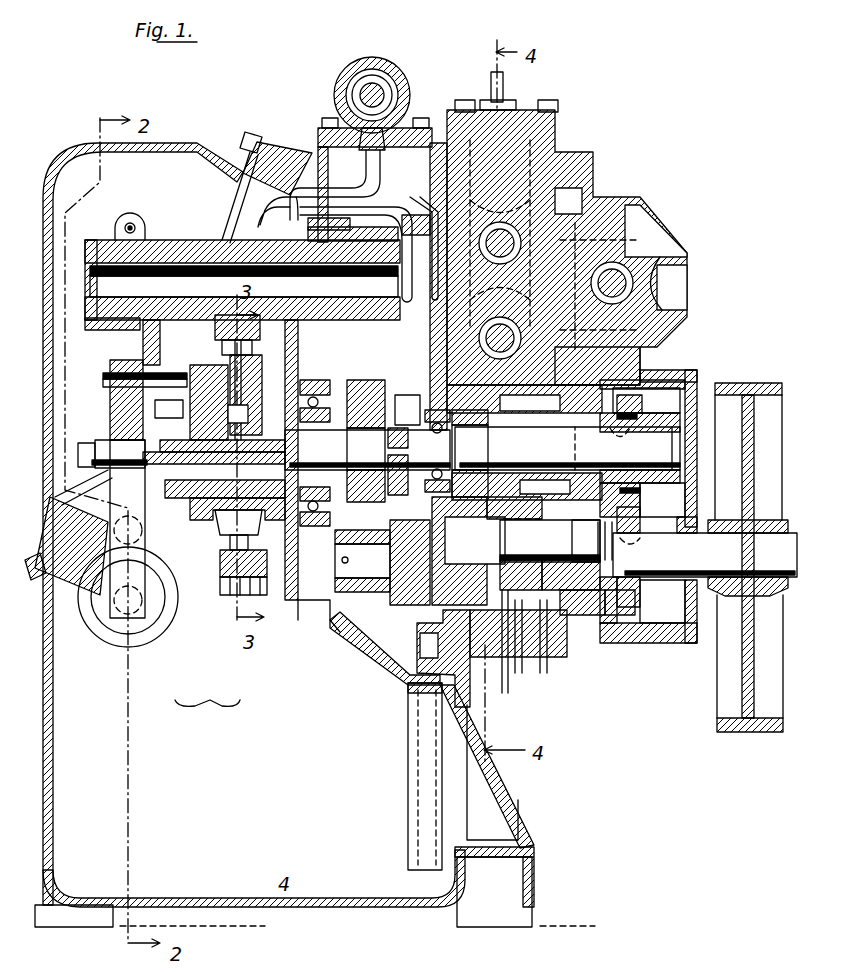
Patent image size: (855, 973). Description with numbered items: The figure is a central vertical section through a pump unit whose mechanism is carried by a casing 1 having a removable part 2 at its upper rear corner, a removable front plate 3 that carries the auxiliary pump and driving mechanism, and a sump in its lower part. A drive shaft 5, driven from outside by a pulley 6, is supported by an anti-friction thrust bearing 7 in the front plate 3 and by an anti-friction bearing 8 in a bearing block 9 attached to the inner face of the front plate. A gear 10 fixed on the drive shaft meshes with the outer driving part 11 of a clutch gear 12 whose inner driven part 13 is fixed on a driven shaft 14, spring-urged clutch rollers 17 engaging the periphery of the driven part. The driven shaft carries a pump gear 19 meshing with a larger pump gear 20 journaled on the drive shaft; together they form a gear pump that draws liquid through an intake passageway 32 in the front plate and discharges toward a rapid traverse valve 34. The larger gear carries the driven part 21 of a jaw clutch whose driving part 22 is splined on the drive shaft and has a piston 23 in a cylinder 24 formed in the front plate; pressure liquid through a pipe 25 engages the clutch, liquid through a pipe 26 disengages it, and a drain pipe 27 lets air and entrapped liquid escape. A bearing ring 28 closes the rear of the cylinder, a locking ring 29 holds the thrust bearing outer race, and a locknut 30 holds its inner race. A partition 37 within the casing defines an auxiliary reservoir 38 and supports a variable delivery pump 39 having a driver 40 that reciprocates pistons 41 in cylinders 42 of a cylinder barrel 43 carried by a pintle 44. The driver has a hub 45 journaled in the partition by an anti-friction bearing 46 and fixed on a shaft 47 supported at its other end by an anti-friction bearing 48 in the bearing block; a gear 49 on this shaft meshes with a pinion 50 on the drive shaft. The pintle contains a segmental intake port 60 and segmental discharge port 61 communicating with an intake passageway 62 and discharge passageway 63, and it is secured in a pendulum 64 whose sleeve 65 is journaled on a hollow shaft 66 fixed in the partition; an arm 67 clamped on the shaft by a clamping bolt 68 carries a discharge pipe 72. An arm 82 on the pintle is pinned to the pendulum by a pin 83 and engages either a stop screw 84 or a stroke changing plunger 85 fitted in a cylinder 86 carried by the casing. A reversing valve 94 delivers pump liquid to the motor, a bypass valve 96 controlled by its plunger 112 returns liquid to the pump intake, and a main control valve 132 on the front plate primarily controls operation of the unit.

The casing 1 is at (60, 675).
The removable part 2 is at (55, 167).
The front plate 3 is at (558, 152).
The drive shaft 5 is at (705, 555).
The pulley 6 is at (752, 732).
The anti-friction thrust bearing 7 is at (592, 543).
The anti-friction bearing 8 is at (400, 608).
The bearing block 9 is at (428, 655).
The gear 10 is at (642, 597).
The driving part 11 is at (660, 448).
The clutch gear 12 is at (642, 397).
The driven part 13 is at (616, 445).
The driven shaft 14 is at (567, 448).
The clutch roller 17 is at (588, 448).
The pump gear 19 is at (470, 453).
The pump gear 20 is at (472, 520).
The driven part of jaw clutch 21 is at (500, 560).
The driving part of jaw clutch 22 is at (510, 522).
The piston 23 is at (538, 593).
The cylinder 24 is at (520, 590).
The pipe 25 is at (544, 673).
The pipe 26 is at (518, 673).
The drain pipe 27 is at (505, 693).
The bearing ring 28 is at (560, 610).
The locking ring 29 is at (610, 615).
The locknut 30 is at (612, 558).
The intake passageway 32 is at (432, 750).
The rapid traverse valve 34 is at (500, 338).
The partition 37 is at (338, 645).
The auxiliary reservoir 38 is at (360, 650).
The variable delivery pump 39 is at (207, 715).
The driver 40 is at (230, 595).
The piston 41 is at (230, 362).
The cylinder 42 is at (250, 405).
The cylinder barrel 43 is at (212, 510).
The pintle 44 is at (112, 454).
The hub 45 is at (367, 450).
The anti-friction bearing 46 is at (330, 385).
The shaft 47 is at (366, 441).
The anti-friction bearing 48 is at (432, 424).
The gear 49 is at (380, 385).
The pinion 50 is at (362, 561).
The segmental intake port 60 is at (252, 528).
The segmental discharge port 61 is at (209, 402).
The intake passageway 62 is at (214, 482).
The discharge passageway 63 is at (169, 407).
The pendulum 64 is at (145, 337).
The sleeve 65 is at (200, 240).
The hollow shaft 66 is at (244, 281).
The arm 67 is at (97, 242).
The clamping bolt 68 is at (131, 224).
The discharge pipe 72 is at (348, 226).
The arm 82 is at (112, 406).
The pin 83 is at (145, 380).
The stop screw 84 is at (140, 535).
The stroke changing plunger 85 is at (142, 608).
The cylinder 86 is at (138, 655).
The reversing valve 94 is at (500, 243).
The bypass valve 96 is at (396, 82).
The plunger 112 is at (360, 92).
The main control valve 132 is at (612, 283).